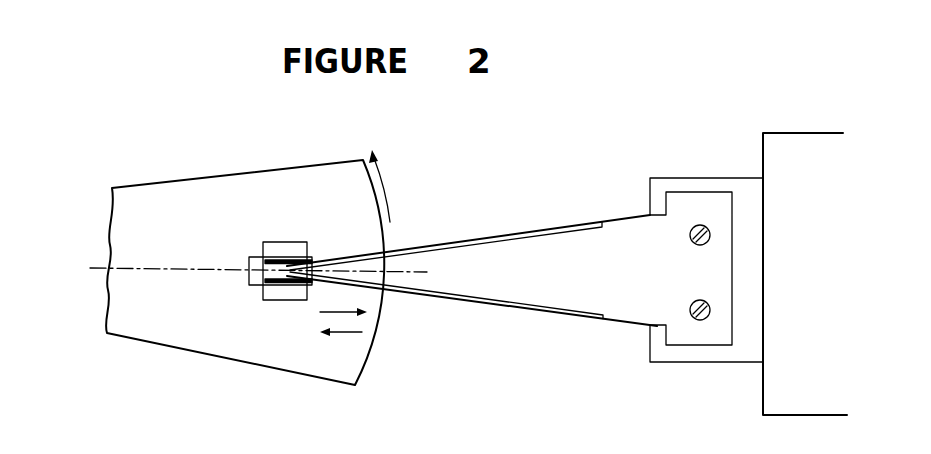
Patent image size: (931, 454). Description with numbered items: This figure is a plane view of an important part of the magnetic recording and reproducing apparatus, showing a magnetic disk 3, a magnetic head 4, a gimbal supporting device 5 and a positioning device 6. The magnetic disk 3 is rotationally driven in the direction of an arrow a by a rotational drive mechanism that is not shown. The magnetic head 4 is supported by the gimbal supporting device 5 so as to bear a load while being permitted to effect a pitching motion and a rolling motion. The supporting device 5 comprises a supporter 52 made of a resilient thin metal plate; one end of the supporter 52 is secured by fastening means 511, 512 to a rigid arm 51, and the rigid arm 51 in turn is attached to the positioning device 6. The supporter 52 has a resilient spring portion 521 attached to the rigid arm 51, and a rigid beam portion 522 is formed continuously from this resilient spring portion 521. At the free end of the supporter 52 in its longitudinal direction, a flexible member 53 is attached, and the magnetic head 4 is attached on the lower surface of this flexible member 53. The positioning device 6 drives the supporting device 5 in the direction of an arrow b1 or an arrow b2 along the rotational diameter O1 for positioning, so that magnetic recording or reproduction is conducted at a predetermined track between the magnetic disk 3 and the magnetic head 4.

The magnetic disk 3 is at (212, 345).
The magnetic head 4 is at (275, 245).
The flexible member 53 is at (277, 268).
The gimbal supporting device 5 is at (471, 188).
The supporter 52 is at (549, 224).
The resilient spring portion 521 is at (617, 303).
The rigid beam portion 522 is at (475, 280).
The rigid arm 51 is at (685, 185).
The fastening means 511 is at (707, 225).
The fastening means 512 is at (702, 320).
The positioning device 6 is at (795, 132).
The rotational diameter O1 is at (155, 268).
The arrow a is at (390, 199).
The arrow b1 is at (321, 300).
The arrow b2 is at (345, 334).